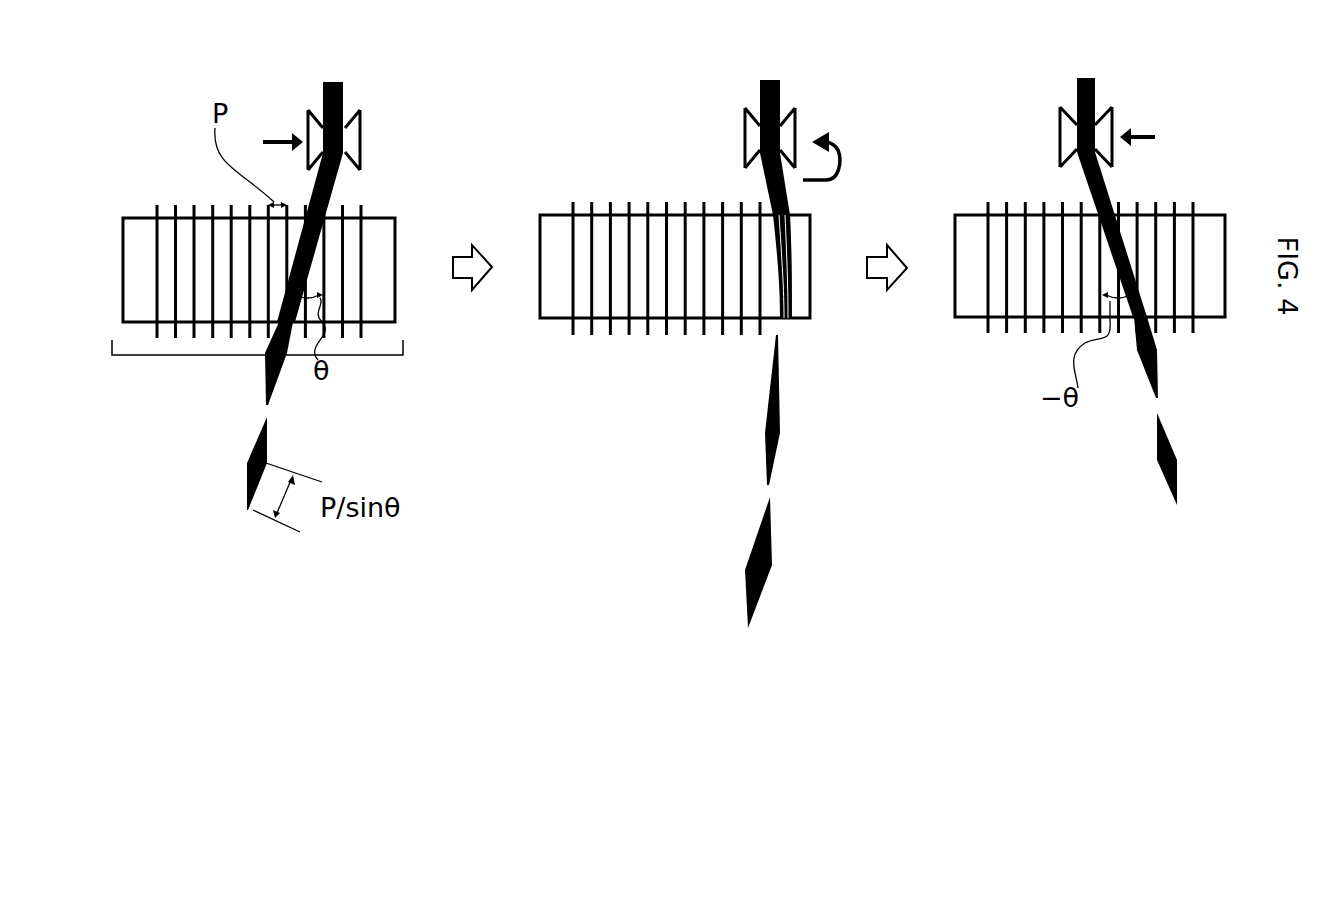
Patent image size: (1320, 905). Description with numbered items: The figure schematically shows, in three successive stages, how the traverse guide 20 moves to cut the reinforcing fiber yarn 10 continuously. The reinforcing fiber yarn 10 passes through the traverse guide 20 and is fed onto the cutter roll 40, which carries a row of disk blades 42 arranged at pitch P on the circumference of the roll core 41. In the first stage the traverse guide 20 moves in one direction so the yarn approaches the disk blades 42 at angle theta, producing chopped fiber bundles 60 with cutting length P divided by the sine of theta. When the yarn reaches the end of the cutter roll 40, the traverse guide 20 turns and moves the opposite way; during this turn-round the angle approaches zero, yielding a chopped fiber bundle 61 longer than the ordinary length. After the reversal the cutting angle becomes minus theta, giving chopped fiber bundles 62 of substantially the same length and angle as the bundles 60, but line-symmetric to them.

The reinforcing fiber yarn 10 is at (324, 91).
The traverse guide 20 is at (360, 140).
The cutter roll 40 is at (208, 355).
The roll core 41 is at (123, 270).
The disk blades 42 is at (342, 338).
The chopped fiber bundle 60 is at (270, 397).
The chopped fiber bundle 61 is at (777, 462).
The chopped fiber bundle 62 is at (1157, 367).